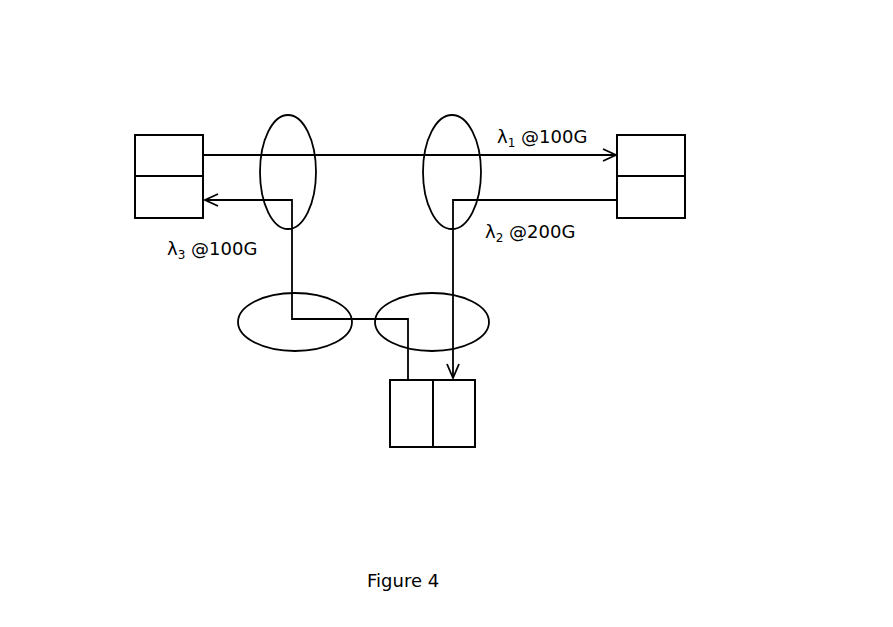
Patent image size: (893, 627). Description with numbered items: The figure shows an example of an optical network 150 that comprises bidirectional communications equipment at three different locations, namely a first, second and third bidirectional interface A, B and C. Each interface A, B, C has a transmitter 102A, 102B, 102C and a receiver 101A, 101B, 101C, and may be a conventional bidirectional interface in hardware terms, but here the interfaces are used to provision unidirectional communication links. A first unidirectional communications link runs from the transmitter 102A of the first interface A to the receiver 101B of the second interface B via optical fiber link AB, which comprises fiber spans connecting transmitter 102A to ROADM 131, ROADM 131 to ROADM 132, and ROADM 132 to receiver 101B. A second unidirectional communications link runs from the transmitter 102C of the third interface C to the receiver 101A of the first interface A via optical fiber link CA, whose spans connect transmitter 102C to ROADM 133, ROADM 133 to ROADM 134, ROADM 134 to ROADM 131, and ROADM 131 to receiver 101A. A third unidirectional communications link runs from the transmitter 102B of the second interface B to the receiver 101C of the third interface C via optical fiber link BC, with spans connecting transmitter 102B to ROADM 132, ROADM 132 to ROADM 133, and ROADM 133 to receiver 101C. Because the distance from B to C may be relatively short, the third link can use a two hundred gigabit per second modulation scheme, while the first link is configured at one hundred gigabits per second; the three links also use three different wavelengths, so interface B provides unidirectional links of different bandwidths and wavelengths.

The optical network 150 is at (412, 73).
The ROADM 131 is at (307, 125).
The ROADM 132 is at (470, 125).
The ROADM 133 is at (487, 308).
The ROADM 134 is at (265, 348).
The receiver 101A is at (135, 195).
The transmitter 102A is at (135, 150).
The receiver 101B is at (685, 155).
The transmitter 102B is at (685, 203).
The receiver 101C is at (460, 447).
The transmitter 102C is at (412, 447).
The first bidirectional interface A is at (162, 135).
The second bidirectional interface B is at (685, 135).
The third bidirectional interface C is at (475, 418).
The optical fiber link AB is at (340, 155).
The optical fiber link BC is at (453, 278).
The optical fiber link CA is at (363, 319).